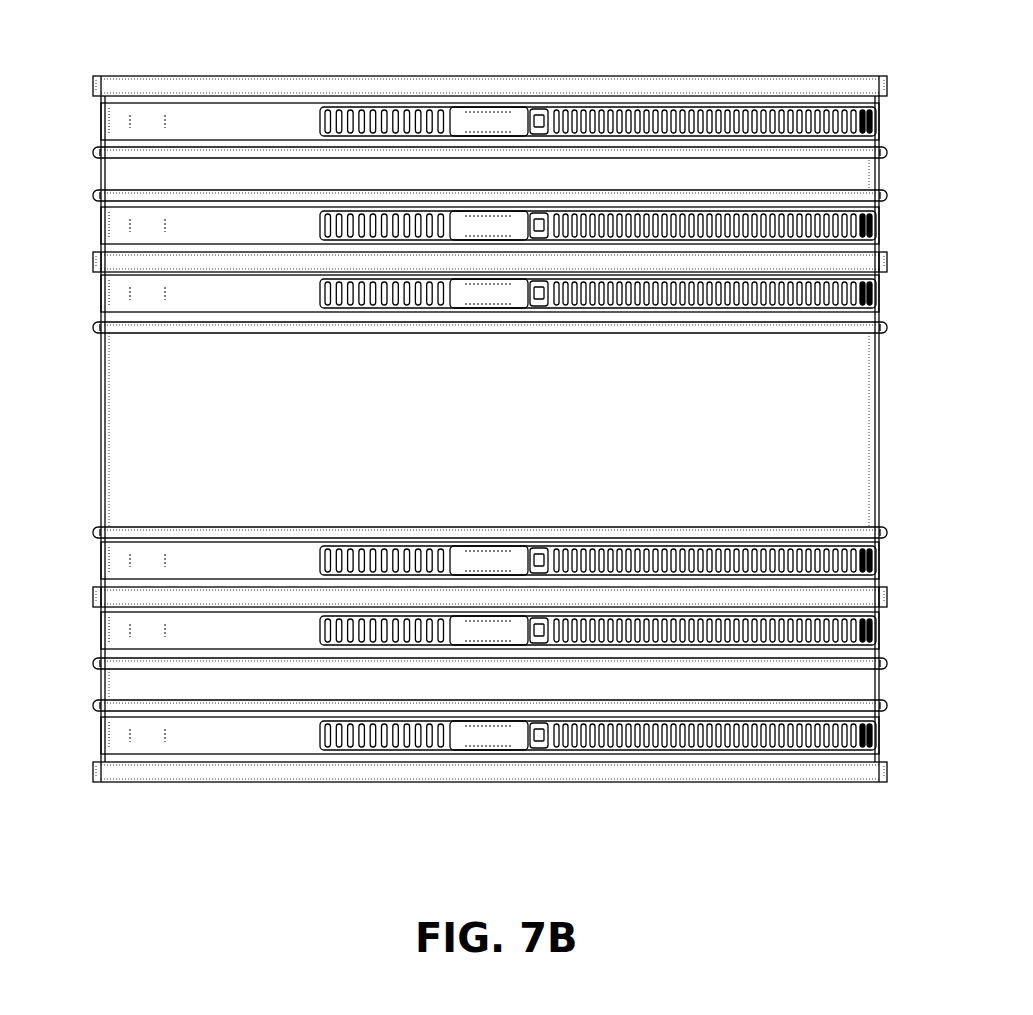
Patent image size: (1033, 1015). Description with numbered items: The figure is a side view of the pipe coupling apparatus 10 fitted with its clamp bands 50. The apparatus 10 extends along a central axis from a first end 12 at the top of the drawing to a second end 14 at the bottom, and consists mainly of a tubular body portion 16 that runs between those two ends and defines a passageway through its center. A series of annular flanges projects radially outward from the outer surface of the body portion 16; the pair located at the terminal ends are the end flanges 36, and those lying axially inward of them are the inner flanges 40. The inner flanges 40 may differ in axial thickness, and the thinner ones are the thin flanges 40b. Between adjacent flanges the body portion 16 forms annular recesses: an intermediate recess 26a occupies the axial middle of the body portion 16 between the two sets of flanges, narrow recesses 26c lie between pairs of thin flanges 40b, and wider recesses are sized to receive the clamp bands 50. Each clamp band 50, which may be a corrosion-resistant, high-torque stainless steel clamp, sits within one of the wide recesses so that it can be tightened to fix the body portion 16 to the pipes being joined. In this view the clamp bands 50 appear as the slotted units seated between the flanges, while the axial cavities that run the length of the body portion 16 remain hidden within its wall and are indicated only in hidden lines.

The pipe coupling apparatus 10 is at (915, 188).
The first end 12 is at (812, 76).
The second end 14 is at (740, 782).
The tubular body portion 16 is at (880, 383).
The intermediate recess 26a is at (101, 425).
The narrow recess 26c is at (101, 690).
The end flange 36 is at (93, 88).
The inner flange 40 is at (93, 152).
The thin flange 40b is at (93, 663).
The clamp band 50 is at (232, 734).